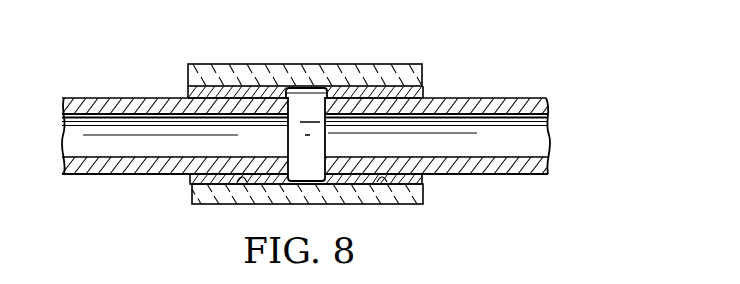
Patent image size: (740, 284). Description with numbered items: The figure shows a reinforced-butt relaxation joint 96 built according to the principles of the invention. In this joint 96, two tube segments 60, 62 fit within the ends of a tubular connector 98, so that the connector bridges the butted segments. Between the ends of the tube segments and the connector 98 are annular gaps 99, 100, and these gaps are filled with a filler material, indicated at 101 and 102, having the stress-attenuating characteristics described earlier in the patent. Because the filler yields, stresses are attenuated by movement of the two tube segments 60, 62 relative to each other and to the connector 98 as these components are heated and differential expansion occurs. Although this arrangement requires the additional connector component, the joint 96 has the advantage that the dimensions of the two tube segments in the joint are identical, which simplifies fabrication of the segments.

The joint 96 is at (170, 38).
The tube segment 60 is at (521, 97).
The tube segment 62 is at (75, 100).
The tubular connector 98 is at (305, 63).
The filler material 101 is at (423, 90).
The filler material 102 is at (188, 88).
The annular gap 100 is at (242, 182).
The annular gap 99 is at (392, 181).